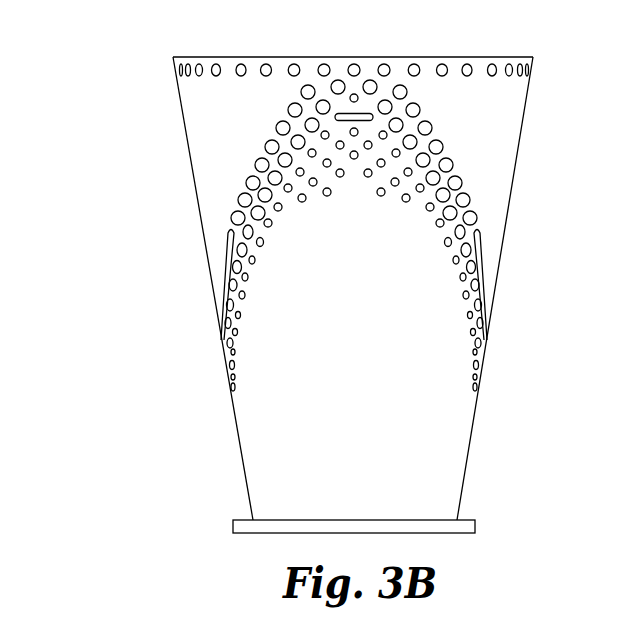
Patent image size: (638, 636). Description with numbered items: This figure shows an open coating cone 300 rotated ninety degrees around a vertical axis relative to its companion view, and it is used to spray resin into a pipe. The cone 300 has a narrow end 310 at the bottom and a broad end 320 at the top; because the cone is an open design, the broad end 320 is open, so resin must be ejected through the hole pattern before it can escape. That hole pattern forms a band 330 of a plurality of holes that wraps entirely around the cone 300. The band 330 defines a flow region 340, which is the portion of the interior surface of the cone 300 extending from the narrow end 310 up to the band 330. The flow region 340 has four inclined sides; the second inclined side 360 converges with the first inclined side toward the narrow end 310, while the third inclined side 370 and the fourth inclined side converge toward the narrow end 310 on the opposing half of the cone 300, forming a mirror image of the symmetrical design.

The open cone 300 is at (120, 103).
The narrow end 310 is at (435, 523).
The broad end 320 is at (436, 57).
The band of holes 330 is at (445, 177).
The flow region 340 is at (357, 325).
The second inclined side 360 is at (225, 344).
The third inclined side 370 is at (483, 346).